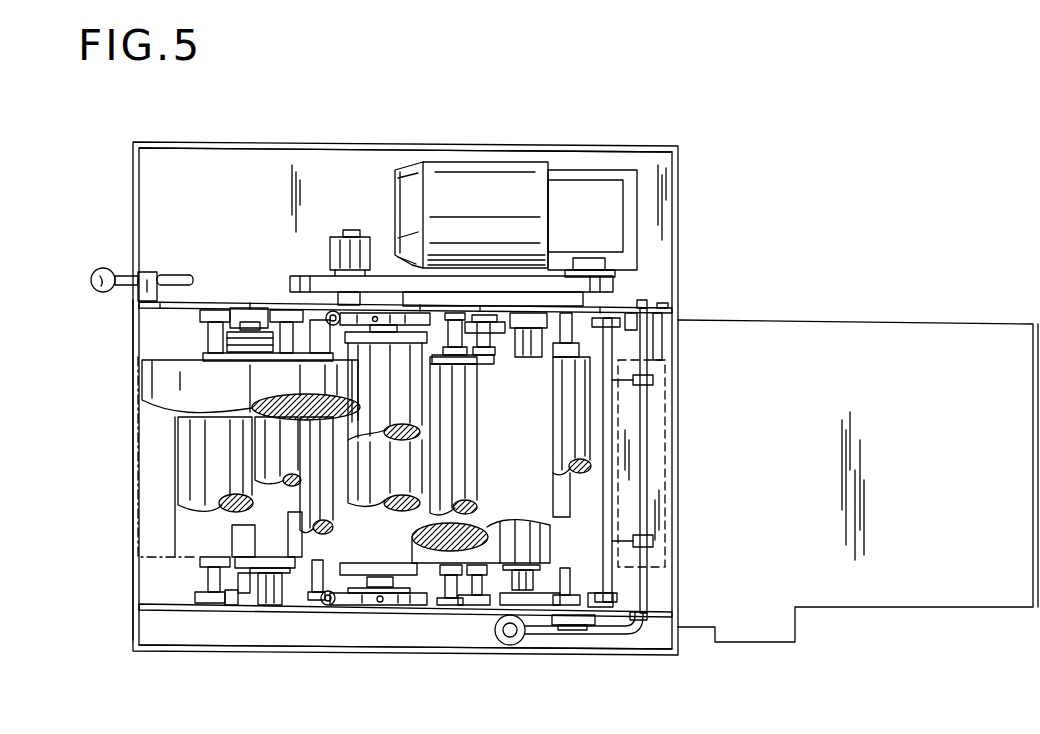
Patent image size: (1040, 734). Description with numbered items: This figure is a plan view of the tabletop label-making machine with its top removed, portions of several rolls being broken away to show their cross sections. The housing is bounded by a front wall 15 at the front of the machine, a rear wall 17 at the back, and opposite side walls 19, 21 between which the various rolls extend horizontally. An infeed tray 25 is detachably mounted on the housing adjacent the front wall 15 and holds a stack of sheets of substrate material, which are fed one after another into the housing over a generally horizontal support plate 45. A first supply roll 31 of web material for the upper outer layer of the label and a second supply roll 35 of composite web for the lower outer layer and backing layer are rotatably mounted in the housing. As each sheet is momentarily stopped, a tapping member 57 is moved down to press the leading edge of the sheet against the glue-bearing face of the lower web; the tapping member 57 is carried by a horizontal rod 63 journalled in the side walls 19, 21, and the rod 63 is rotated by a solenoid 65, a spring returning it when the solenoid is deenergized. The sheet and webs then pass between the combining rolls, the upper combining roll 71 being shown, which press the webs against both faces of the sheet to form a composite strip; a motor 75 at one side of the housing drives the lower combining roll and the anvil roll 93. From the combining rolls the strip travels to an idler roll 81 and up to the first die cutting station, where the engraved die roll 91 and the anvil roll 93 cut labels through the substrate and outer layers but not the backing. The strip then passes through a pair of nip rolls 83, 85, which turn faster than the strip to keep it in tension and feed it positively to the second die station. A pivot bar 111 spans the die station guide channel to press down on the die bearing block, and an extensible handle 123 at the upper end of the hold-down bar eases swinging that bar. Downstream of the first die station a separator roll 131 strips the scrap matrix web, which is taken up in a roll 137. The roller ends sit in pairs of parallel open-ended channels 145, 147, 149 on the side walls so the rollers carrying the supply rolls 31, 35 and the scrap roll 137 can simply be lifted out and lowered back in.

The front wall 15 is at (680, 240).
The rear wall 17 is at (128, 462).
The side wall 19 is at (410, 146).
The side wall 21 is at (338, 655).
The infeed tray 25 is at (905, 320).
The first supply roll 31 is at (510, 572).
The second supply roll 35 is at (662, 492).
The support plate 45 is at (658, 460).
The tapping member 57 is at (640, 592).
The horizontal rod 63 is at (650, 553).
The solenoid 65 is at (500, 645).
The upper combining roll 71 is at (570, 376).
The motor 75 is at (495, 165).
The idler roll 81 is at (455, 435).
The nip roll 83 is at (280, 446).
The nip roll 85 is at (305, 488).
The die roll 91 is at (190, 478).
The anvil roll 93 is at (232, 545).
The pivot bar 111 is at (402, 304).
The extensible handle 123 is at (326, 315).
The separator roll 131 is at (300, 510).
The roll 137 is at (185, 382).
The channels 145 is at (497, 305).
The channels 147 is at (545, 607).
The channels 149 is at (237, 303).